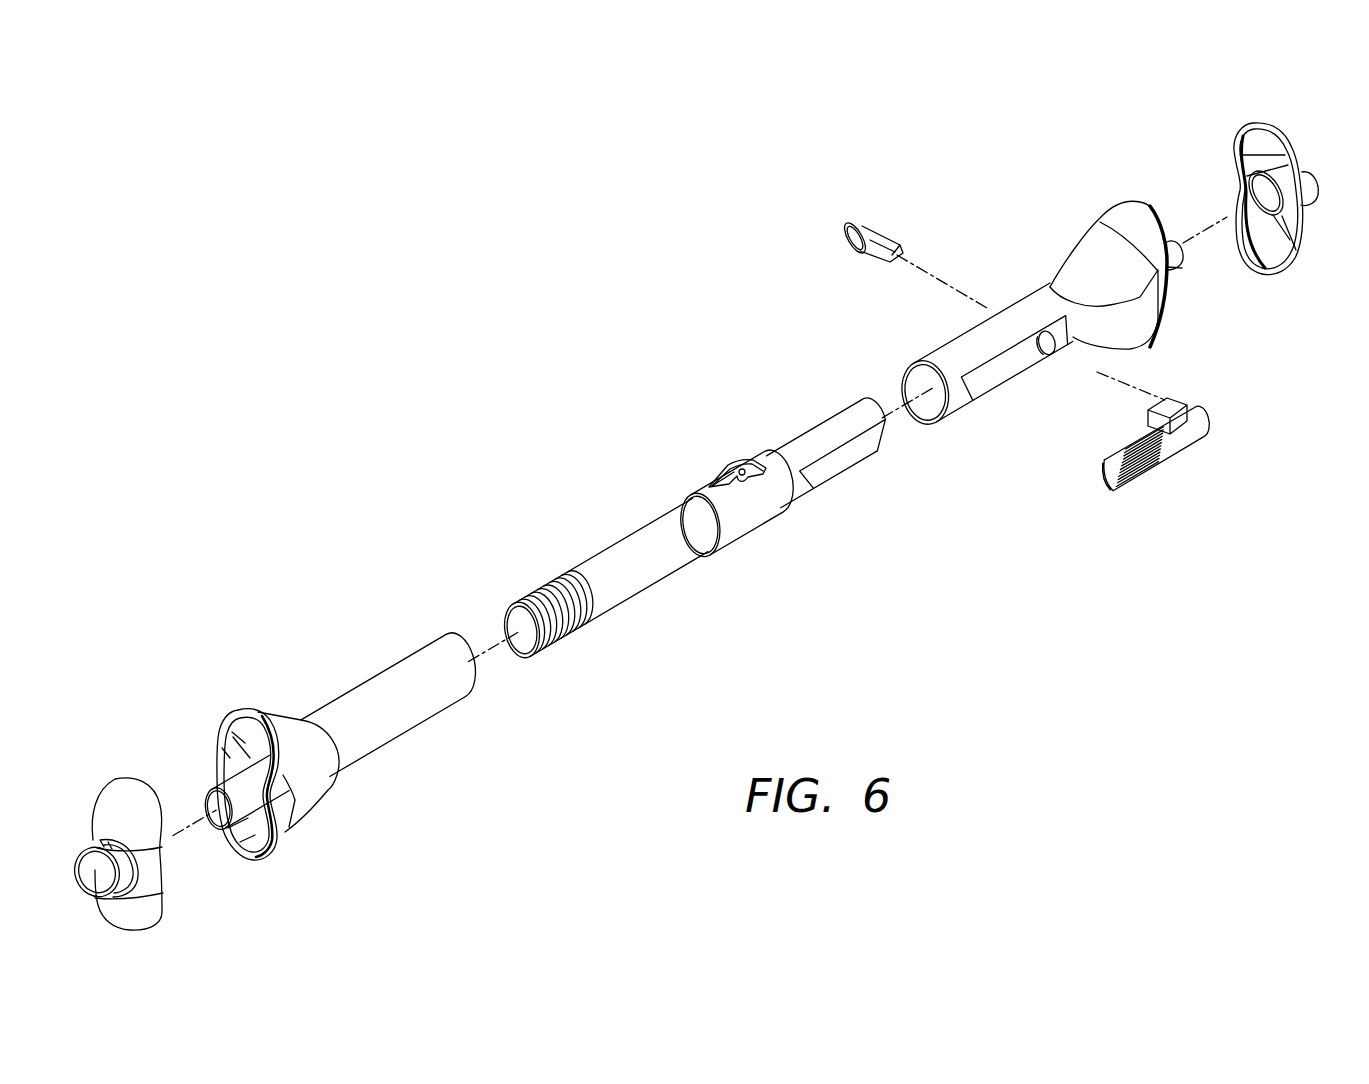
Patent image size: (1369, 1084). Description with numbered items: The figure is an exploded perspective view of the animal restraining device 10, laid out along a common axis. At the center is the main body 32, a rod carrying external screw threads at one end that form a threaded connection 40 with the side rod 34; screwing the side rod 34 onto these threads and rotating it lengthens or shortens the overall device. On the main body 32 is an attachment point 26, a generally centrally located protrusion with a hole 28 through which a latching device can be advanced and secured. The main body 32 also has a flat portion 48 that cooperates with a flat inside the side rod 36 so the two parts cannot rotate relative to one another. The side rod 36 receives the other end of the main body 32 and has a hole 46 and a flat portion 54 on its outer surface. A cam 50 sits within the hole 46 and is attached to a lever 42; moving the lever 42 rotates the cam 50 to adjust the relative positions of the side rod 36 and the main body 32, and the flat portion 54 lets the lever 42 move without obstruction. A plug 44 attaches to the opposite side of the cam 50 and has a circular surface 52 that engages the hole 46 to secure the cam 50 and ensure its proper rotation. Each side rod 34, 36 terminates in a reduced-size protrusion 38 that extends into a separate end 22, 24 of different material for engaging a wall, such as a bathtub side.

The animal restraining device 10 is at (487, 346).
The end 22 is at (102, 812).
The end 24 is at (1283, 137).
The attachment point 26 is at (743, 458).
The hole 28 is at (721, 488).
The main body 32 is at (776, 572).
The side rod 34 is at (421, 752).
The side rod 36 is at (958, 402).
The protrusion 38 is at (224, 783).
The threaded connection 40 is at (491, 578).
The lever 42 is at (1187, 440).
The plug 44 is at (850, 235).
The hole 46 is at (1056, 350).
The flat portion 48 is at (845, 460).
The cam 50 is at (1170, 400).
The circular surface 52 is at (868, 232).
The flat portion 54 is at (1026, 402).